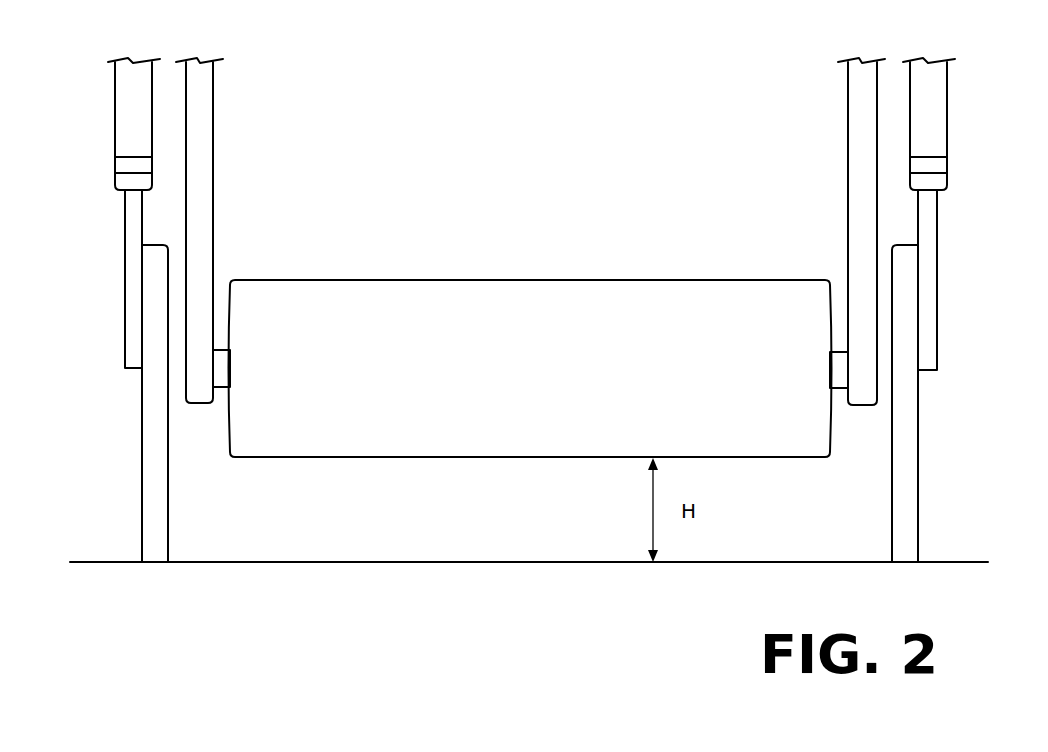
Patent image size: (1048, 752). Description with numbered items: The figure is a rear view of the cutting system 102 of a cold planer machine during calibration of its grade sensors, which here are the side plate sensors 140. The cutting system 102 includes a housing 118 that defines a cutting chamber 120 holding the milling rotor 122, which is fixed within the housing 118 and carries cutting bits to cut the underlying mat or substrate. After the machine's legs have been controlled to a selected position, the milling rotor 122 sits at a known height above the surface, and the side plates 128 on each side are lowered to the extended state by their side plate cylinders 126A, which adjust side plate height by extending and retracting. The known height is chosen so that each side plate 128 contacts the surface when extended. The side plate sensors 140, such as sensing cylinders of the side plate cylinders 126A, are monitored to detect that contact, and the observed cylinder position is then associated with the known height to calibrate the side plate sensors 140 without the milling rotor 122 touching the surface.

The cutting system 102 is at (460, 512).
The housing 118 is at (213, 173).
The cutting chamber 120 is at (442, 173).
The milling rotor 122 is at (637, 280).
The side plate cylinder 126A is at (125, 297).
The side plate 128 is at (140, 510).
The side plate sensor 140 is at (115, 165).